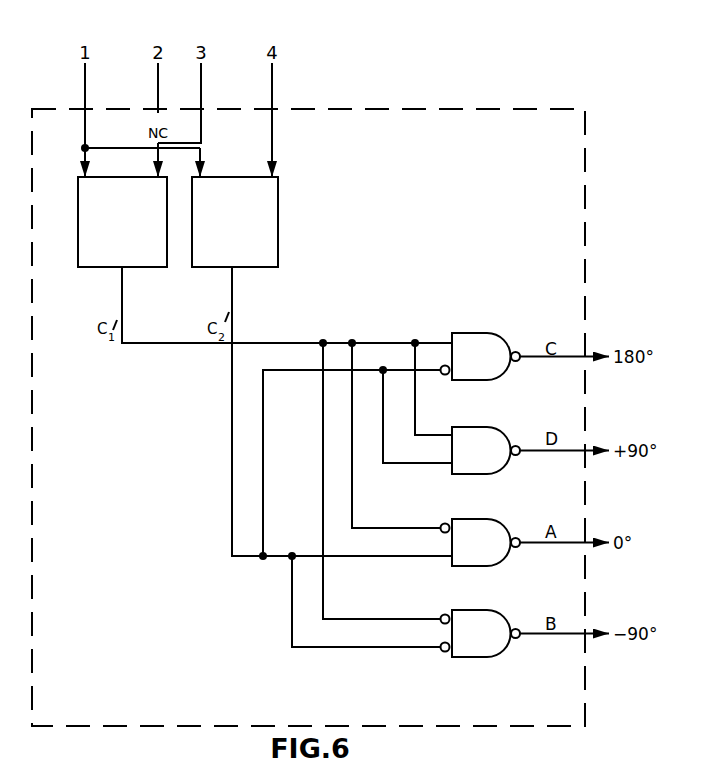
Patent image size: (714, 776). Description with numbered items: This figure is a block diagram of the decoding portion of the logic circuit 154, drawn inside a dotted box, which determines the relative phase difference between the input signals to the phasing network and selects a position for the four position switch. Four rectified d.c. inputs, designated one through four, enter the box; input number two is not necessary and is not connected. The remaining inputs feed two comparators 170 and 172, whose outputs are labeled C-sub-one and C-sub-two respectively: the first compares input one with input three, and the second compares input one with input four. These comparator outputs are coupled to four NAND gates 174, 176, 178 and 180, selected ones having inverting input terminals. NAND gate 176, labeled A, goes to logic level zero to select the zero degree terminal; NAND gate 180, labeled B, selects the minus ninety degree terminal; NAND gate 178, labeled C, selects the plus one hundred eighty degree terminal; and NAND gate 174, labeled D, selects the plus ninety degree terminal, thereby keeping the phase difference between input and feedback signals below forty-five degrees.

The logic circuit 154 is at (453, 105).
The comparator 170 is at (163, 269).
The comparator 172 is at (266, 269).
The NAND gate 174 is at (488, 422).
The NAND gate 176 is at (492, 515).
The NAND gate 178 is at (488, 328).
The NAND gate 180 is at (492, 606).